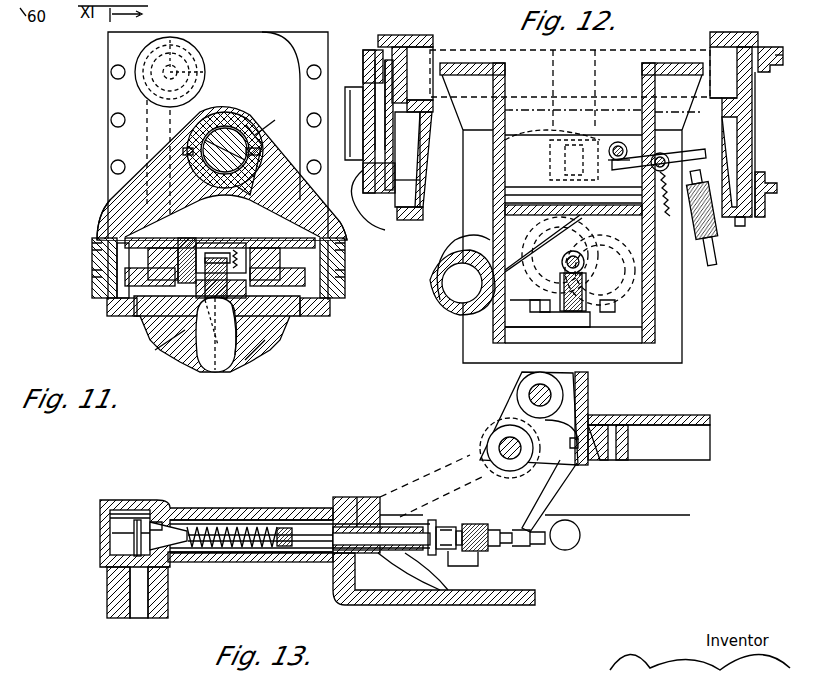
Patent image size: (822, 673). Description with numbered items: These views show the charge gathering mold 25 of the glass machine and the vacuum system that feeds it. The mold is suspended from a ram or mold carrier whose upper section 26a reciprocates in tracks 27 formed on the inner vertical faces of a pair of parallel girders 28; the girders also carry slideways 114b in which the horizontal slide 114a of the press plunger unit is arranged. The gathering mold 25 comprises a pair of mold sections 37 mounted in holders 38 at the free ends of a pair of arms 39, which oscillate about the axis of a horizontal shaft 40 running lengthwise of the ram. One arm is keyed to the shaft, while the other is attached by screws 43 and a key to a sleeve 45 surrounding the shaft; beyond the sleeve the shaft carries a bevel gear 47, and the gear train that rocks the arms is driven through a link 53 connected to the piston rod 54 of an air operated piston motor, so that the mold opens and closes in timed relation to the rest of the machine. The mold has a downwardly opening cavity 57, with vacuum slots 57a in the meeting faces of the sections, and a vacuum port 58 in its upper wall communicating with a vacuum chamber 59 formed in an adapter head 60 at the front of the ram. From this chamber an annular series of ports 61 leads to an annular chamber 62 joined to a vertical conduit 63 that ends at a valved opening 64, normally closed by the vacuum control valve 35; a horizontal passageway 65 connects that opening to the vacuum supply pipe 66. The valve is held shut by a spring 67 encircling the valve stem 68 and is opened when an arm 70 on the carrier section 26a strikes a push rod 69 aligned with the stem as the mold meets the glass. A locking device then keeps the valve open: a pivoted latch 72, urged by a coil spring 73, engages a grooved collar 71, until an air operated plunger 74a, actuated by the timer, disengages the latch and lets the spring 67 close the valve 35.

In FIG. 11, the charge gathering mold 25 is at (292, 352).
In FIG. 13, the upper section of mold carrier 26a is at (670, 415).
In FIG. 12, the tracks 27 is at (425, 95).
In FIG. 12, the girders 28 is at (430, 185).
In FIG. 13, the vacuum control valve 35 is at (134, 538).
In FIG. 11, the mold sections 37 is at (190, 352).
In FIG. 11, the holders 38 is at (122, 317).
In FIG. 11, the arms 39 is at (112, 198).
In FIG. 11, the horizontal shaft 40 is at (233, 130).
In FIG. 11, the screws 43 is at (258, 150).
In FIG. 11, the sleeve 45 is at (216, 130).
In FIG. 12, the bevel gear 47 is at (592, 296).
In FIG. 12, the link 53 is at (540, 265).
In FIG. 12, the piston rod 54 is at (585, 262).
In FIG. 11, the cavity 57 is at (225, 372).
In FIG. 11, the vacuum slots 57a is at (240, 360).
In FIG. 11, the vacuum port 58 is at (222, 305).
In FIG. 11, the vacuum chamber 59 is at (193, 243).
In FIG. 11, the adapter head 60 is at (272, 244).
In FIG. 11, the ports 61 is at (224, 250).
In FIG. 11, the annular chamber 62 is at (165, 246).
In FIG. 11, the vertical conduit 63 is at (160, 135).
In FIG. 13, the vertical conduit 63 is at (150, 590).
In FIG. 13, the valved opening 64 is at (168, 508).
In FIG. 13, the horizontal passageway 65 is at (268, 522).
In FIG. 12, the vacuum supply pipe 66 is at (445, 305).
In FIG. 13, the vacuum supply pipe 66 is at (420, 590).
In FIG. 13, the spring 67 is at (242, 548).
In FIG. 11, the valve stem 68 is at (180, 72).
In FIG. 13, the valve stem 68 is at (298, 560).
In FIG. 12, the push rod 69 is at (622, 145).
In FIG. 13, the push rod 69 is at (432, 522).
In FIG. 13, the arm 70 is at (540, 540).
In FIG. 12, the grooved collar 71 is at (600, 148).
In FIG. 13, the grooved collar 71 is at (467, 524).
In FIG. 12, the pivoted latch 72 is at (685, 152).
In FIG. 12, the coil spring 73 is at (668, 220).
In FIG. 12, the air operated plunger 74a is at (722, 177).
In FIG. 12, the horizontal slide 114a is at (390, 215).
In FIG. 12, the slideways 114b is at (368, 50).